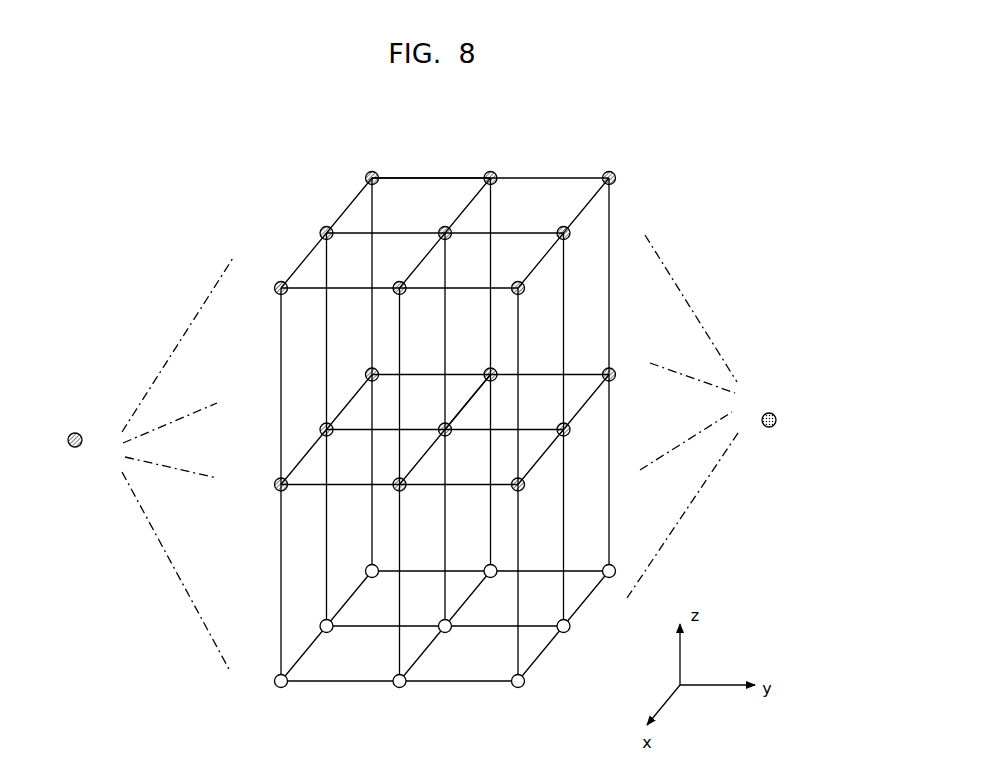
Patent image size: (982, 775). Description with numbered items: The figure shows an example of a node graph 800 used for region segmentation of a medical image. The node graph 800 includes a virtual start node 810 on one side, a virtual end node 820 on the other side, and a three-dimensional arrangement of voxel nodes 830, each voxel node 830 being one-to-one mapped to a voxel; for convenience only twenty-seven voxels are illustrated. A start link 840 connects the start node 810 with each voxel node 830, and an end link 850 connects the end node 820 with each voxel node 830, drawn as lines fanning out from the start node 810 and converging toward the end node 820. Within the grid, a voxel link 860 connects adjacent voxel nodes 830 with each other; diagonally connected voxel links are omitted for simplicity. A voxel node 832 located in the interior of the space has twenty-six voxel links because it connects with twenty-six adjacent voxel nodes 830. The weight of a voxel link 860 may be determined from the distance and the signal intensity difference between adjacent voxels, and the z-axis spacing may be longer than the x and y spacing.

The node graph 800 is at (533, 154).
The virtual start node 810 is at (75, 431).
The virtual end node 820 is at (773, 412).
The voxel node 830 is at (445, 665).
The voxel node located in the space 832 is at (467, 403).
The start link 840 is at (210, 297).
The end link 850 is at (710, 338).
The voxel link 860 is at (415, 178).